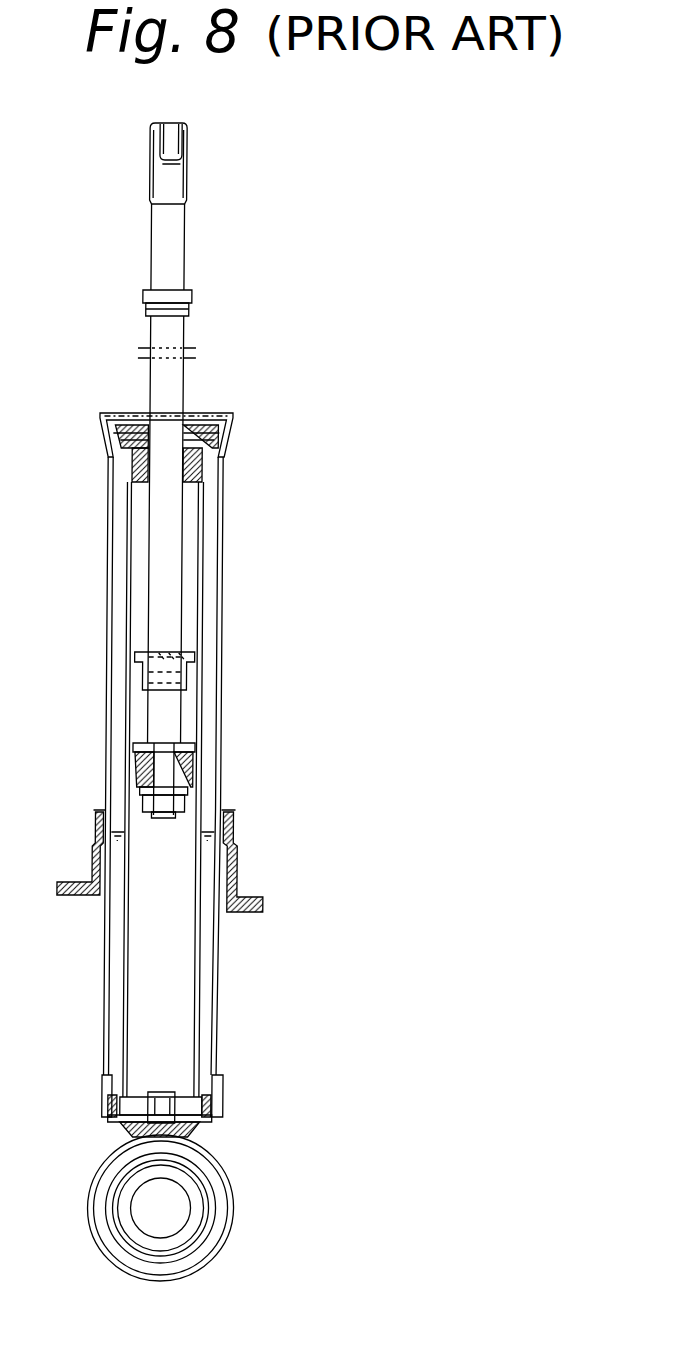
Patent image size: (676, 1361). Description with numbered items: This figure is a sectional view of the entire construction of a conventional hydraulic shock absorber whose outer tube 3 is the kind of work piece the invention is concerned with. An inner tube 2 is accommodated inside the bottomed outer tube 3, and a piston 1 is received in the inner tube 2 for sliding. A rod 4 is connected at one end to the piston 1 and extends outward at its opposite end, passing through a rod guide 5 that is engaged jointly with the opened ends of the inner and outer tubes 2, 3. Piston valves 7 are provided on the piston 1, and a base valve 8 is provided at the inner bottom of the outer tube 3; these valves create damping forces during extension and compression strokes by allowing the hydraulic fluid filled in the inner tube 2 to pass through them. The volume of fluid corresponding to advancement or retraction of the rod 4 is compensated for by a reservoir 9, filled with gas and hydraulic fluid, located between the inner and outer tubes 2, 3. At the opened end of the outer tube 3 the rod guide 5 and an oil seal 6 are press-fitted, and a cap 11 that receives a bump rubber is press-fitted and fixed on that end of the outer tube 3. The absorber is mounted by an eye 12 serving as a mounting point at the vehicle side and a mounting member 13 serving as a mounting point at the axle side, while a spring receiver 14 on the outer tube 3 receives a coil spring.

The piston 1 is at (198, 770).
The inner tube 2 is at (201, 567).
The outer tube 3 is at (114, 967).
The rod 4 is at (166, 595).
The rod guide 5 is at (225, 442).
The oil seal 6 is at (105, 427).
The piston valves 7 is at (142, 787).
The base valve 8 is at (182, 1103).
The reservoir 9 is at (122, 517).
The cap 11 is at (209, 413).
The eye 12 is at (115, 1162).
The mounting member 13 is at (146, 167).
The spring receiver 14 is at (266, 905).